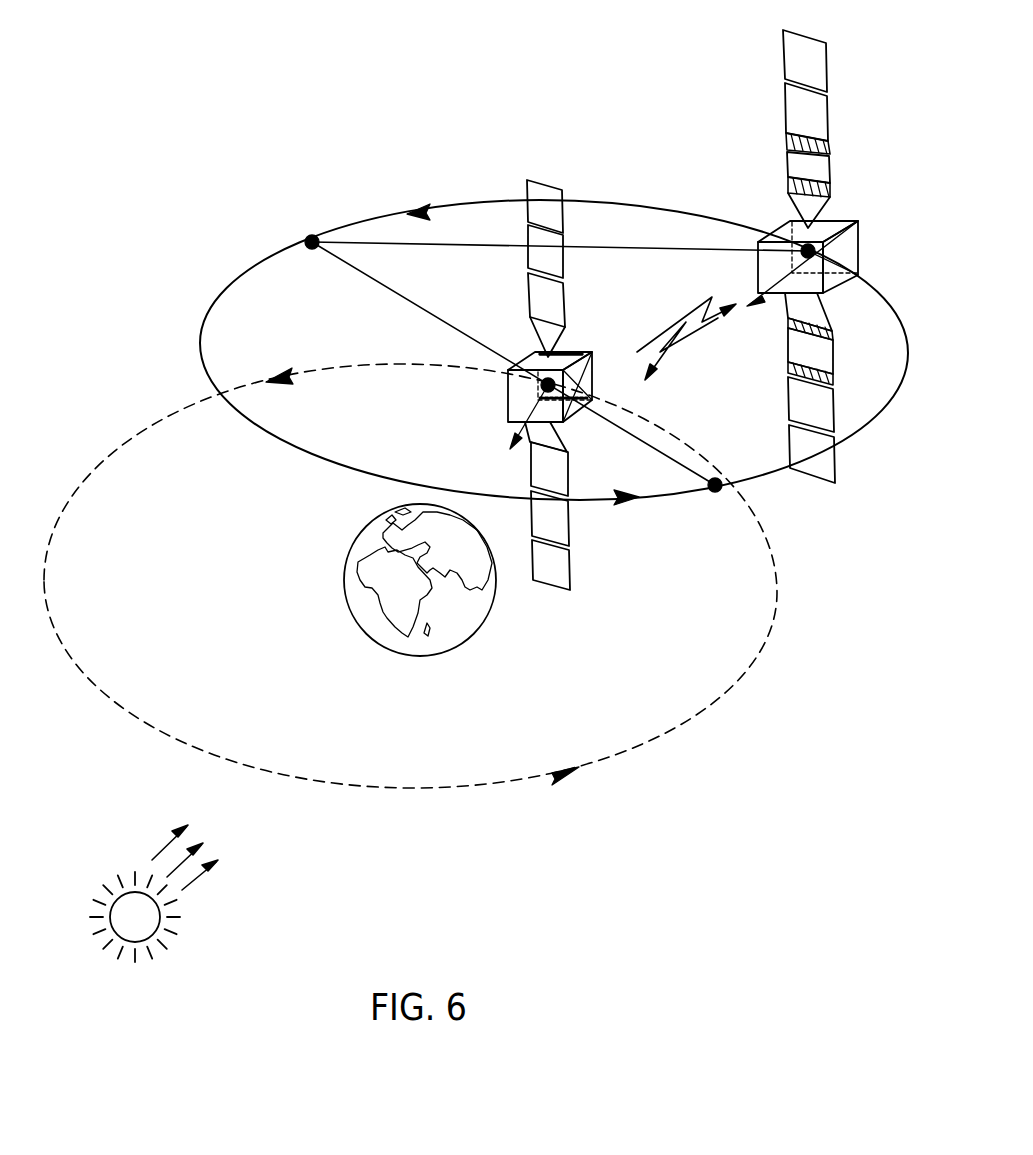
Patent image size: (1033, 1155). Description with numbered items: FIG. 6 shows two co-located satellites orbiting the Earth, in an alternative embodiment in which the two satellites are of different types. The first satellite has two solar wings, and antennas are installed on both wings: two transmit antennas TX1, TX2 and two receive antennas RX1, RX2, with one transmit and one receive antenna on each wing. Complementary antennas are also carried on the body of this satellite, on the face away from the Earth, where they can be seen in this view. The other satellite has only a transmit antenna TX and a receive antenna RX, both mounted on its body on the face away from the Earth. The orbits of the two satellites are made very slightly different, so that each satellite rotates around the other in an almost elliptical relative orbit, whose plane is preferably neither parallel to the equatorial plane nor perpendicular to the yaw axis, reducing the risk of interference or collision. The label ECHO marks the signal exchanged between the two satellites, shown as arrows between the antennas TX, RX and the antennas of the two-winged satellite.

The transmit antenna TX1 is at (787, 137).
The receive antenna RX1 is at (790, 183).
The transmit antenna TX2 is at (787, 366).
The receive antenna RX2 is at (787, 322).
The transmit antenna TX is at (570, 357).
The receive antenna RX is at (552, 388).
The echo signal path between satellites ECHO is at (686, 320).